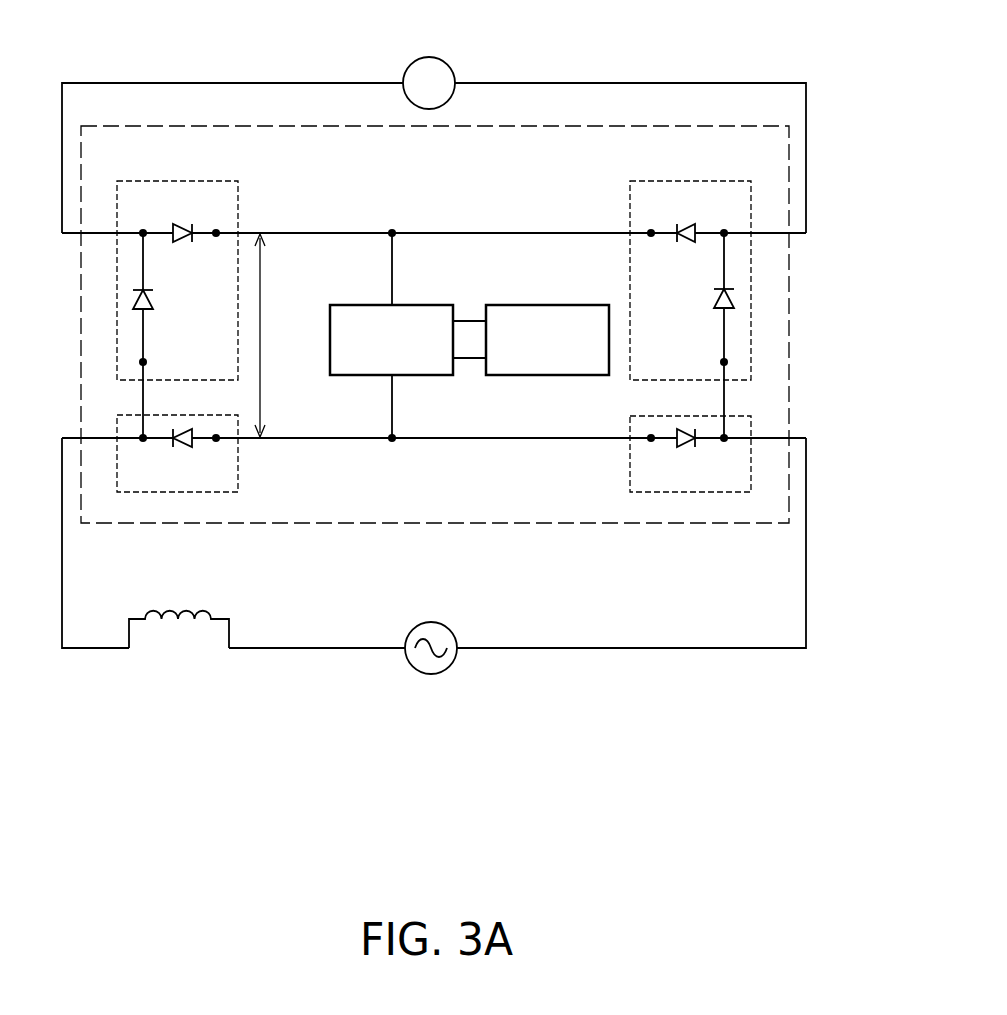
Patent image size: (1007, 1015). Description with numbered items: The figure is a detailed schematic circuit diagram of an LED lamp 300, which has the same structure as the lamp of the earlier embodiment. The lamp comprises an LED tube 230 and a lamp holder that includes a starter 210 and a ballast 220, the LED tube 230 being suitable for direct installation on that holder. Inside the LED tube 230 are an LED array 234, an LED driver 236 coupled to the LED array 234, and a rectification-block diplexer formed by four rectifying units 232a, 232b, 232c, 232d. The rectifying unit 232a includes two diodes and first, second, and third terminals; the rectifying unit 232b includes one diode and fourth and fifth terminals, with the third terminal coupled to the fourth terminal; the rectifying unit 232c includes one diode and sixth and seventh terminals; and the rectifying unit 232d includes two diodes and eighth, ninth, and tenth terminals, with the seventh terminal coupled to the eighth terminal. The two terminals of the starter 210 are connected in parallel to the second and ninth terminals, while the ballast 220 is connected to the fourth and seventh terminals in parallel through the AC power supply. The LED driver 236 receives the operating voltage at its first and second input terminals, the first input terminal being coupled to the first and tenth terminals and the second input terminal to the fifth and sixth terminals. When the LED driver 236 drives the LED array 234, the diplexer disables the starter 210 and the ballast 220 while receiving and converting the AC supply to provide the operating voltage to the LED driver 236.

The starter 210 is at (429, 57).
The ballast 220 is at (211, 611).
The LED tube 230 is at (789, 343).
The rectifying unit 232a is at (238, 212).
The rectifying unit 232b is at (238, 460).
The rectifying unit 232c is at (630, 430).
The rectifying unit 232d is at (630, 212).
The LED array 234 is at (567, 305).
The LED driver 236 is at (409, 305).
The LED lamp 300 is at (770, 737).